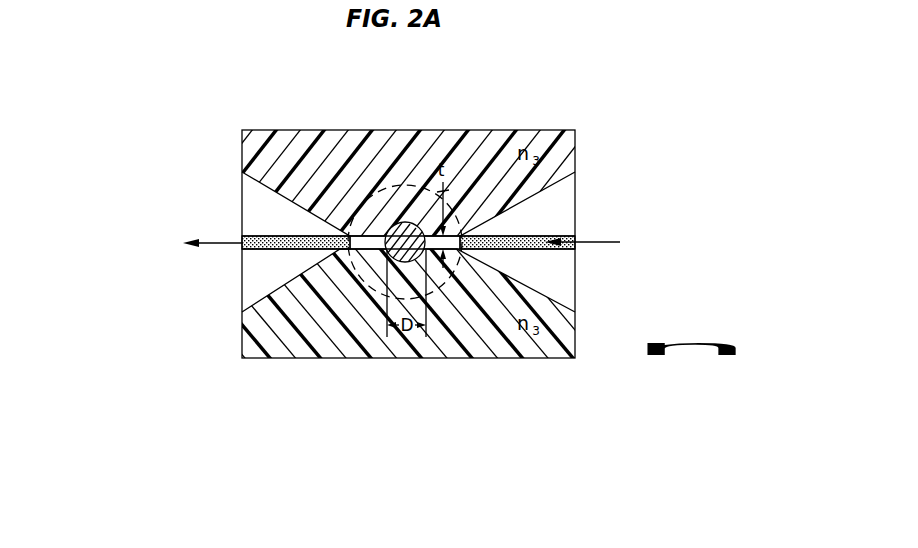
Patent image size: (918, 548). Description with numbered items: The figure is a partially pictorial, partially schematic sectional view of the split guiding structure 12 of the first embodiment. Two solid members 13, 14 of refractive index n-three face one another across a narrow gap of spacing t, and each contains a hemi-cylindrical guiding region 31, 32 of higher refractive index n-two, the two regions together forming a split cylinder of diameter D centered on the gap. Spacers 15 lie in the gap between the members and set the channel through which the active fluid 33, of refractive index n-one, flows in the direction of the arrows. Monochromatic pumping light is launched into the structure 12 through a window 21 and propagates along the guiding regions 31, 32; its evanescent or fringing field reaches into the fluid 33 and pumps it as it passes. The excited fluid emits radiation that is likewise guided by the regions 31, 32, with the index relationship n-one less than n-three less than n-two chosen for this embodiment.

The split guiding structure 12 is at (450, 393).
The solid member 13 is at (264, 138).
The solid member 14 is at (258, 352).
The spacer 15 is at (306, 250).
The window 21 is at (404, 178).
The hemi-cylindrical guiding region 31 is at (390, 224).
The hemi-cylindrical guiding region 32 is at (390, 262).
The fluid 33 is at (617, 210).